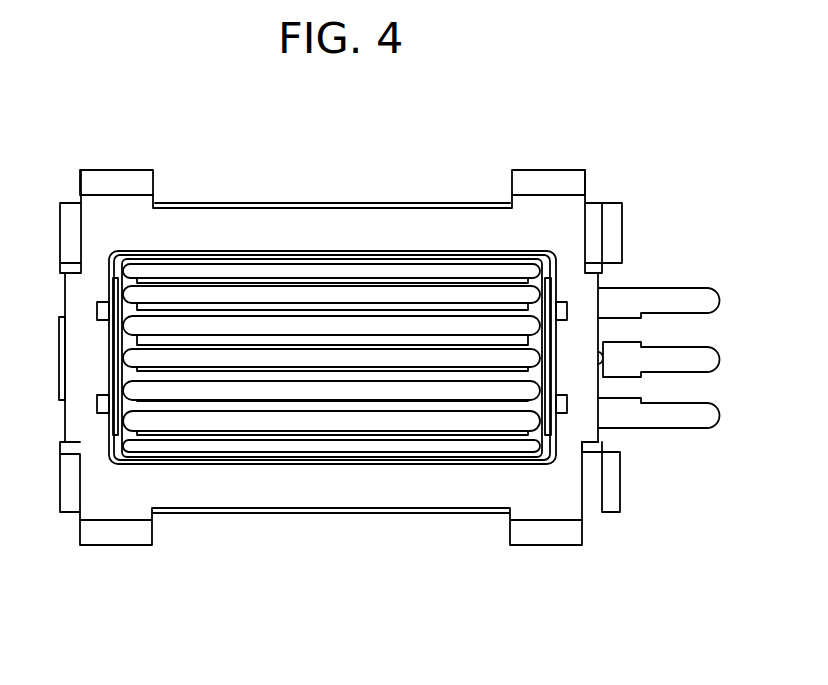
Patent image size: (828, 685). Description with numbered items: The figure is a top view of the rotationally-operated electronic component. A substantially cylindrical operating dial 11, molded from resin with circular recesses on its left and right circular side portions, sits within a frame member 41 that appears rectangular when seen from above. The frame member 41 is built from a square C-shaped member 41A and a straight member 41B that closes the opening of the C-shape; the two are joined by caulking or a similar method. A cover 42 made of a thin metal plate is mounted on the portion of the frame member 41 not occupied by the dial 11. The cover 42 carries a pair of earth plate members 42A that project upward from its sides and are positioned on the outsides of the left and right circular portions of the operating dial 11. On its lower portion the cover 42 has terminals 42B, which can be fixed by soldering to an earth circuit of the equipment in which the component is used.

The operating dial 11 is at (310, 283).
The frame member 41 is at (340, 548).
The square C-shaped member 41A is at (70, 478).
The straight member 41B is at (598, 477).
The cover 42 is at (433, 222).
The earth plate members 42A is at (552, 352).
The terminals 42B is at (115, 183).